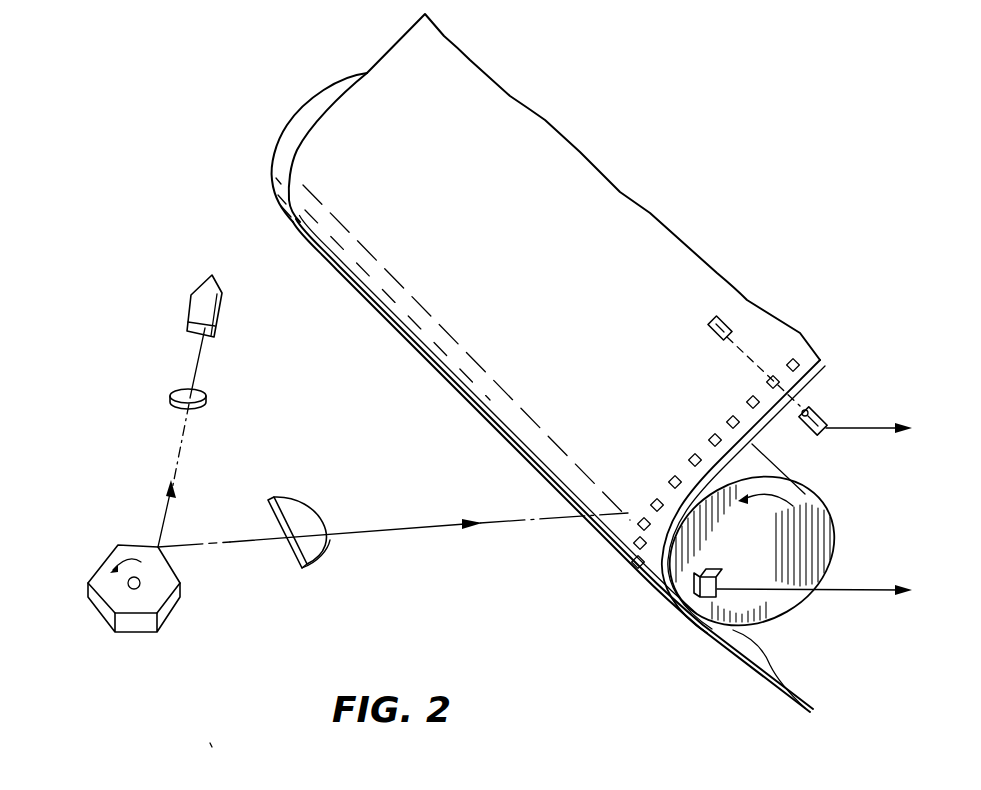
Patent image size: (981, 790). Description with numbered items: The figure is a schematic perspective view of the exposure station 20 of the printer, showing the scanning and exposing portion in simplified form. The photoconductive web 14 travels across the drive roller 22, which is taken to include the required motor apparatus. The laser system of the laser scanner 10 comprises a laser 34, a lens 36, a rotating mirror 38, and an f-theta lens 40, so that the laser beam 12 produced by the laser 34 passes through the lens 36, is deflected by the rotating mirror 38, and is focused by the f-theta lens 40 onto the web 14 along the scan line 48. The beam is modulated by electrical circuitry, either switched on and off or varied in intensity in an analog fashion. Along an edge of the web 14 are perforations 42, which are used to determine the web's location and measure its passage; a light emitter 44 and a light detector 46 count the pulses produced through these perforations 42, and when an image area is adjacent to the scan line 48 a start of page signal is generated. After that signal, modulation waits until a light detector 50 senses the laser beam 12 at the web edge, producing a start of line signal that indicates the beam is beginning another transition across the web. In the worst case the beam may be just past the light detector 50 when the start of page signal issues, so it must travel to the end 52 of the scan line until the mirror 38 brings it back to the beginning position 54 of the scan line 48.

The laser scanner 10 is at (234, 459).
The laser beam 12 is at (425, 534).
The photoconductive web 14 is at (508, 102).
The exposure station 20 is at (240, 126).
The drive roller 22 is at (803, 478).
The laser 34 is at (191, 300).
The lens 36 is at (207, 398).
The rotating mirror 38 is at (104, 560).
The f-theta lens 40 is at (318, 500).
The perforations 42 is at (672, 478).
The light emitter 44 is at (735, 318).
The light detector 46 is at (820, 410).
The scan line 48 is at (478, 360).
The light detector 50 is at (712, 571).
The end of the scan line 52 is at (300, 185).
The beginning position of the scan line 54 is at (688, 596).